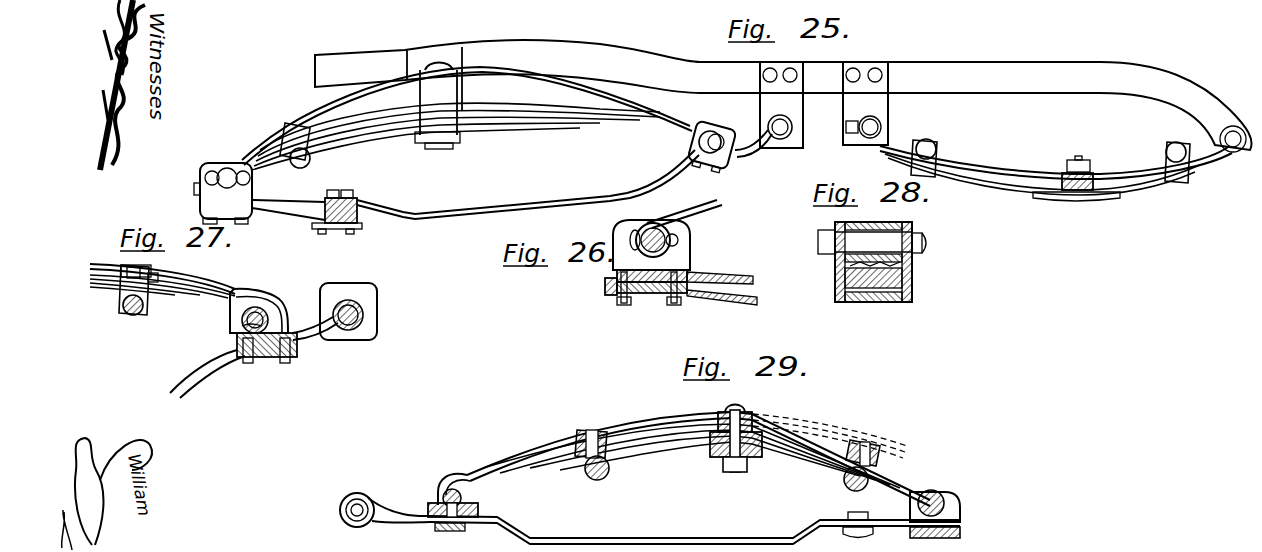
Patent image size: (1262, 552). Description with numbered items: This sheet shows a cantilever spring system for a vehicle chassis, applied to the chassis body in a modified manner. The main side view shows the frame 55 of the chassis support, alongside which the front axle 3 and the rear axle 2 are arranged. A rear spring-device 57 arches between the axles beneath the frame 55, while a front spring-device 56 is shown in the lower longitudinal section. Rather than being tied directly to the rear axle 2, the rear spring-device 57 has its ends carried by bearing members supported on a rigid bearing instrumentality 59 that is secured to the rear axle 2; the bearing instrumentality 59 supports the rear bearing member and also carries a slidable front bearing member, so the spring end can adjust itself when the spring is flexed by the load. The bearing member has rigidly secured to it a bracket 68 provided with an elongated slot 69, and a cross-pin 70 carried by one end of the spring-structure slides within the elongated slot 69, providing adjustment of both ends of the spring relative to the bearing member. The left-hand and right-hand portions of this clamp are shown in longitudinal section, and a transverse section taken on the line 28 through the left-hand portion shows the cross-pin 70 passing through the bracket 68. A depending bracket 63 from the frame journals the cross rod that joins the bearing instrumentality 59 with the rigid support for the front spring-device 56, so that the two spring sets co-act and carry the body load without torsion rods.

In FIG. 25, the frame 55 is at (783, 96).
In FIG. 25, the rear spring-device 57 is at (713, 145).
In FIG. 26, the rear spring-device 57 is at (713, 206).
In FIG. 25, the bearing instrumentality 59 is at (527, 201).
In FIG. 27, the bearing instrumentality 59 is at (203, 372).
In FIG. 26, the bearing instrumentality 59 is at (723, 277).
In FIG. 25, the bracket 68 is at (722, 119).
In FIG. 27, the bracket 68 is at (272, 289).
In FIG. 26, the bracket 68 is at (615, 228).
In FIG. 28, the bracket 68 is at (912, 268).
In FIG. 25, the elongated slot 69 is at (738, 150).
In FIG. 27, the elongated slot 69 is at (242, 326).
In FIG. 26, the elongated slot 69 is at (672, 240).
In FIG. 25, the cross-pin 70 is at (700, 144).
In FIG. 27, the cross-pin 70 is at (242, 317).
In FIG. 26, the cross-pin 70 is at (650, 232).
In FIG. 28, the cross-pin 70 is at (880, 244).
In FIG. 25, the rear axle 2 is at (362, 200).
In FIG. 25, the front axle 3 is at (1060, 176).
In FIG. 26, the section line 28 is at (660, 222).
In FIG. 29, the front spring-device 56 is at (694, 472).
In FIG. 29, the bracket 63 is at (670, 538).